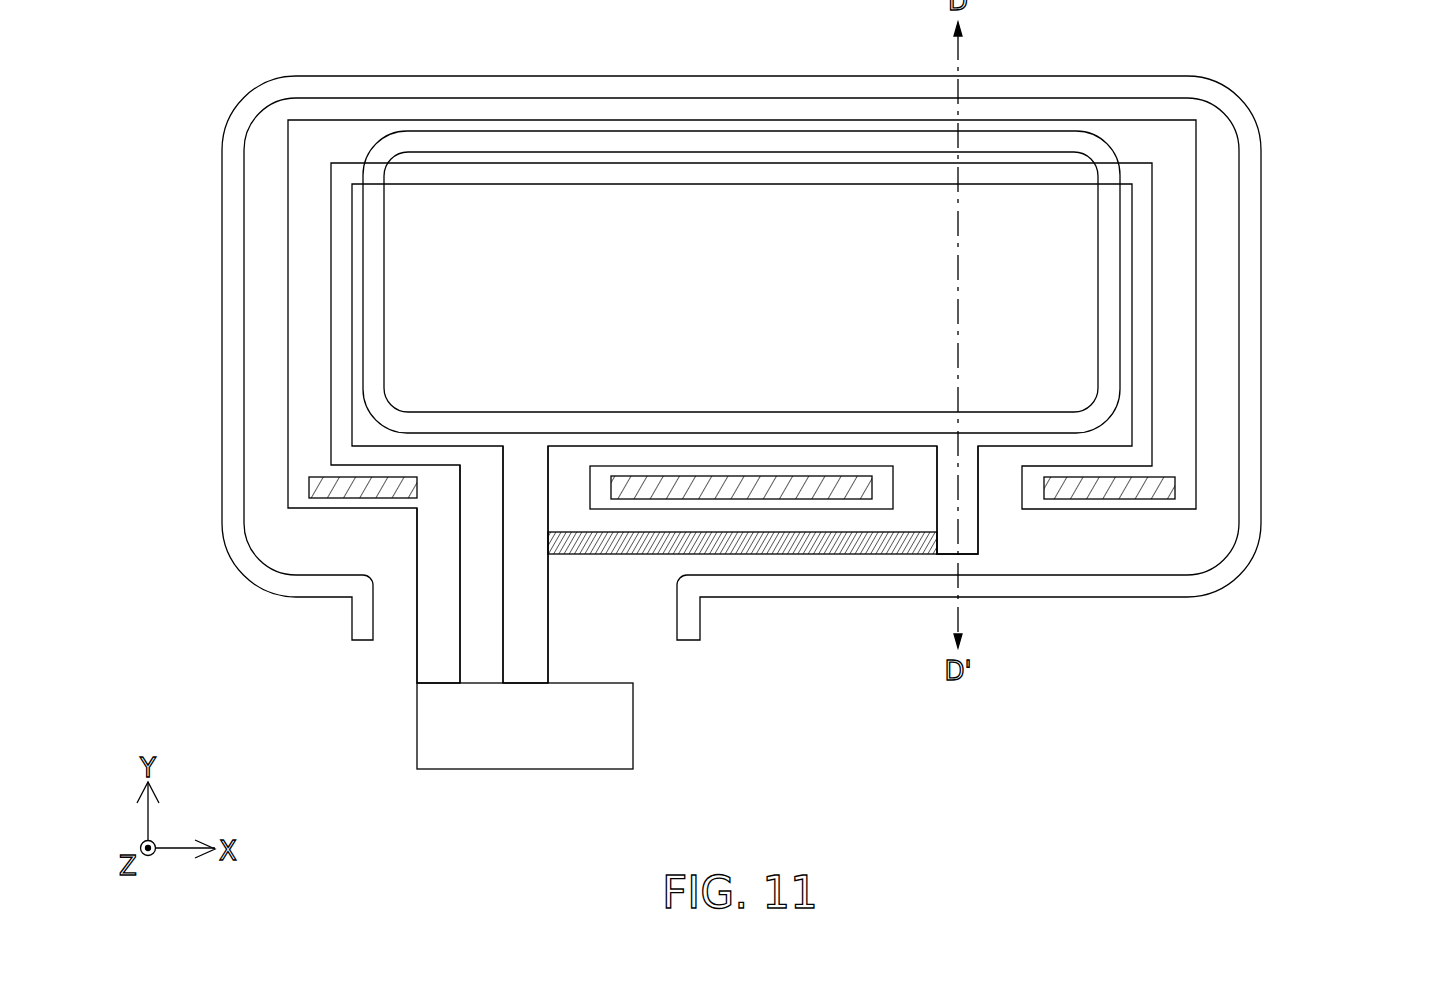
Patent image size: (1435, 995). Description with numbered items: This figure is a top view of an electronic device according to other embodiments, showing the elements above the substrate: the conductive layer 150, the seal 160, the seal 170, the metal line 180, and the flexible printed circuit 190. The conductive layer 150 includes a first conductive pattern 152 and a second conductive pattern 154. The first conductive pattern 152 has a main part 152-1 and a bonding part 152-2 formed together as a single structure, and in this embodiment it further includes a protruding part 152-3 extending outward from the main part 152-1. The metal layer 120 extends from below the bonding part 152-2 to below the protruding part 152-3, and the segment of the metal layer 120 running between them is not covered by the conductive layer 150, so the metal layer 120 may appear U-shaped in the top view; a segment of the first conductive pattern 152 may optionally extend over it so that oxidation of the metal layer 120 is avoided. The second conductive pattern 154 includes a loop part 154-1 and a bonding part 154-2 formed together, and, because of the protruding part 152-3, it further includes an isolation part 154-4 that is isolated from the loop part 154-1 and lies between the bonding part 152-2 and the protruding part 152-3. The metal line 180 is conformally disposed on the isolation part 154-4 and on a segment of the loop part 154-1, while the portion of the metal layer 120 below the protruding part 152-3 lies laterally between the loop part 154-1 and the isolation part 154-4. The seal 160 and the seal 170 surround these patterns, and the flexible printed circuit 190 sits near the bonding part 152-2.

The metal layer 120 is at (583, 543).
The conductive layer 150 is at (990, 740).
The first conductive pattern 152 is at (1153, 740).
The main part 152-1 is at (779, 313).
The bonding part 152-2 is at (513, 637).
The protruding part 152-3 is at (970, 532).
The second conductive pattern 154 is at (1338, 740).
The loop part 154-1 is at (1180, 367).
The bonding part 154-2 is at (427, 533).
The isolation part 154-4 is at (632, 503).
The seal 160 is at (1107, 279).
The seal 170 is at (1252, 205).
The metal line 180 is at (1142, 489).
The flexible printed circuit 190 is at (548, 742).